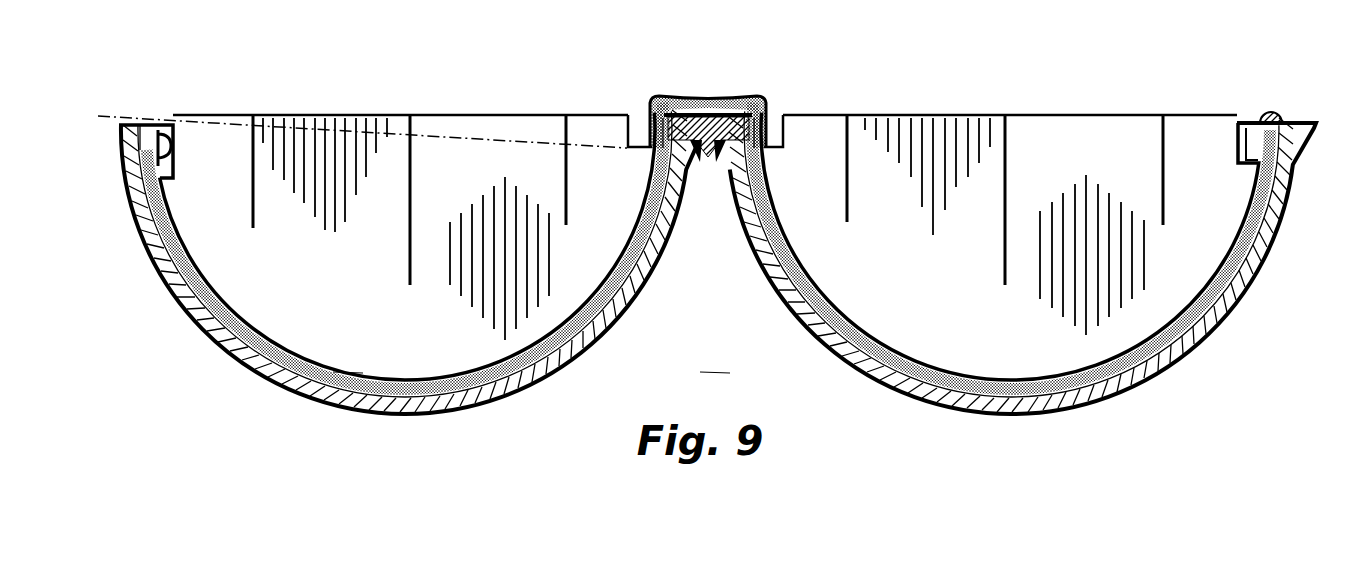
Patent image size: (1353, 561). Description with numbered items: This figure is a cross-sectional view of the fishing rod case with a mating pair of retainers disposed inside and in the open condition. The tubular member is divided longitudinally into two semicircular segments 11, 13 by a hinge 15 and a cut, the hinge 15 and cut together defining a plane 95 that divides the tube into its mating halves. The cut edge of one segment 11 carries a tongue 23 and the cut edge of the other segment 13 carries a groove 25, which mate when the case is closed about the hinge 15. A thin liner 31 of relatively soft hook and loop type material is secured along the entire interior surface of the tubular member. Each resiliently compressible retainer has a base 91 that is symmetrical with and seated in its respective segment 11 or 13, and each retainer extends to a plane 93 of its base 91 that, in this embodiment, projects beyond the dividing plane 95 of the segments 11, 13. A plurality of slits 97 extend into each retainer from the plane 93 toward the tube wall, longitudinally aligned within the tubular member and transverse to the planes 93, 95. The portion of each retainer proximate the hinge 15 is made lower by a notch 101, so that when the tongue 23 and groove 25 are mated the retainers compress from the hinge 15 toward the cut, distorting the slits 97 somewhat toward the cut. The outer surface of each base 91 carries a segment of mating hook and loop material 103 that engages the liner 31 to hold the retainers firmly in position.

The segment 11 is at (1183, 357).
The segment 13 is at (623, 317).
The hinge 15 is at (708, 152).
The tongue 23 is at (1272, 108).
The groove 25 is at (148, 137).
The liner 31 is at (338, 382).
The base 91 is at (293, 318).
The plane 93 is at (515, 113).
The plane 95 is at (138, 120).
The slits 97 is at (1162, 137).
The notch 101 is at (772, 133).
The hook and loop material 103 is at (983, 397).